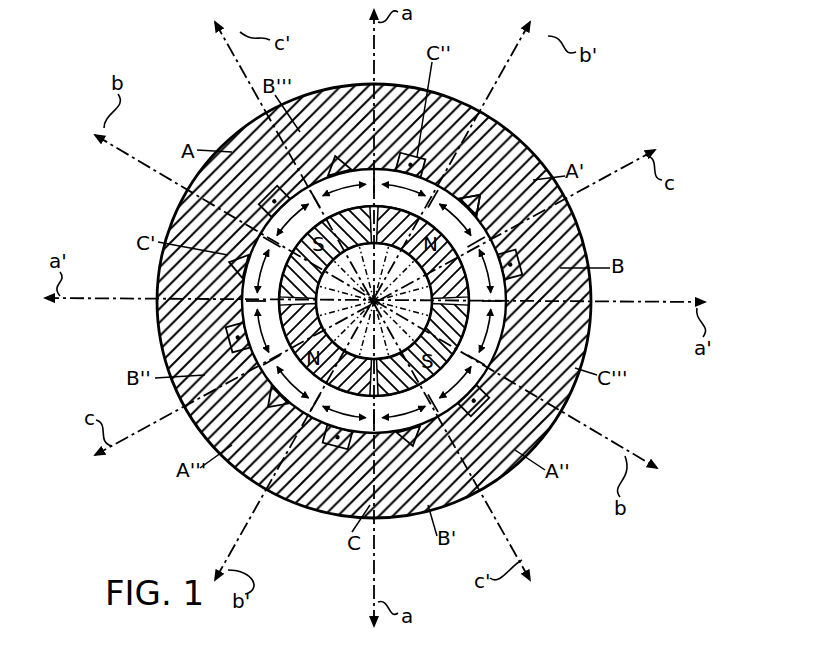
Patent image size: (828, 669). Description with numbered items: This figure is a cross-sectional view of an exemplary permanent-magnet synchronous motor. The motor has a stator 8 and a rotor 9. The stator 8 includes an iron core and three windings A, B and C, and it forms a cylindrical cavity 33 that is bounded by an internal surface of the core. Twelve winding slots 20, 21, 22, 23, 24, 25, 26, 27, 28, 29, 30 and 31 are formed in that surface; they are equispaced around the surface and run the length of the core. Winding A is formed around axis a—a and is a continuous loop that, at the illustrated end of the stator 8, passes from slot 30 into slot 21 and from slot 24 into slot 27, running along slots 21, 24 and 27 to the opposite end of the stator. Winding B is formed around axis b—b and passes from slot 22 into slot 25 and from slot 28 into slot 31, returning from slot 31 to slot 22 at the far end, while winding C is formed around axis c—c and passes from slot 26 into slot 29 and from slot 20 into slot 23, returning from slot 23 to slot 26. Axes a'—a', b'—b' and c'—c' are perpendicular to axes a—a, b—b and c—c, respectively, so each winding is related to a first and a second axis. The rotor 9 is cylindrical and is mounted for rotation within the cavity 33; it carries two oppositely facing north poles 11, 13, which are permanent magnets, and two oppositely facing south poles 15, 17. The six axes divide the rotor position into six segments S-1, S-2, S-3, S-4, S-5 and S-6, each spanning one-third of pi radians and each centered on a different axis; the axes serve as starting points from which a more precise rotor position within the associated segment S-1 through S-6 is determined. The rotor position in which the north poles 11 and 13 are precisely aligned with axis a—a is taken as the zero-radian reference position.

The stator 8 is at (185, 318).
The rotor 9 is at (430, 355).
The north pole 11 is at (487, 297).
The north pole 13 is at (292, 312).
The south pole 15 is at (370, 208).
The south pole 17 is at (376, 394).
The winding slot 20 is at (430, 163).
The winding slot 21 is at (522, 150).
The winding slot 22 is at (565, 232).
The winding slot 23 is at (578, 340).
The winding slot 24 is at (505, 462).
The winding slot 25 is at (400, 500).
The winding slot 26 is at (330, 500).
The winding slot 27 is at (255, 468).
The winding slot 28 is at (205, 345).
The winding slot 29 is at (225, 262).
The winding slot 30 is at (245, 142).
The winding slot 31 is at (341, 155).
The cylindrical cavity 33 is at (305, 490).
The segment S-1 is at (395, 160).
The segment S-2 is at (540, 290).
The segment S-3 is at (220, 185).
The segment S-4 is at (463, 157).
The segment S-5 is at (558, 215).
The segment S-6 is at (290, 140).